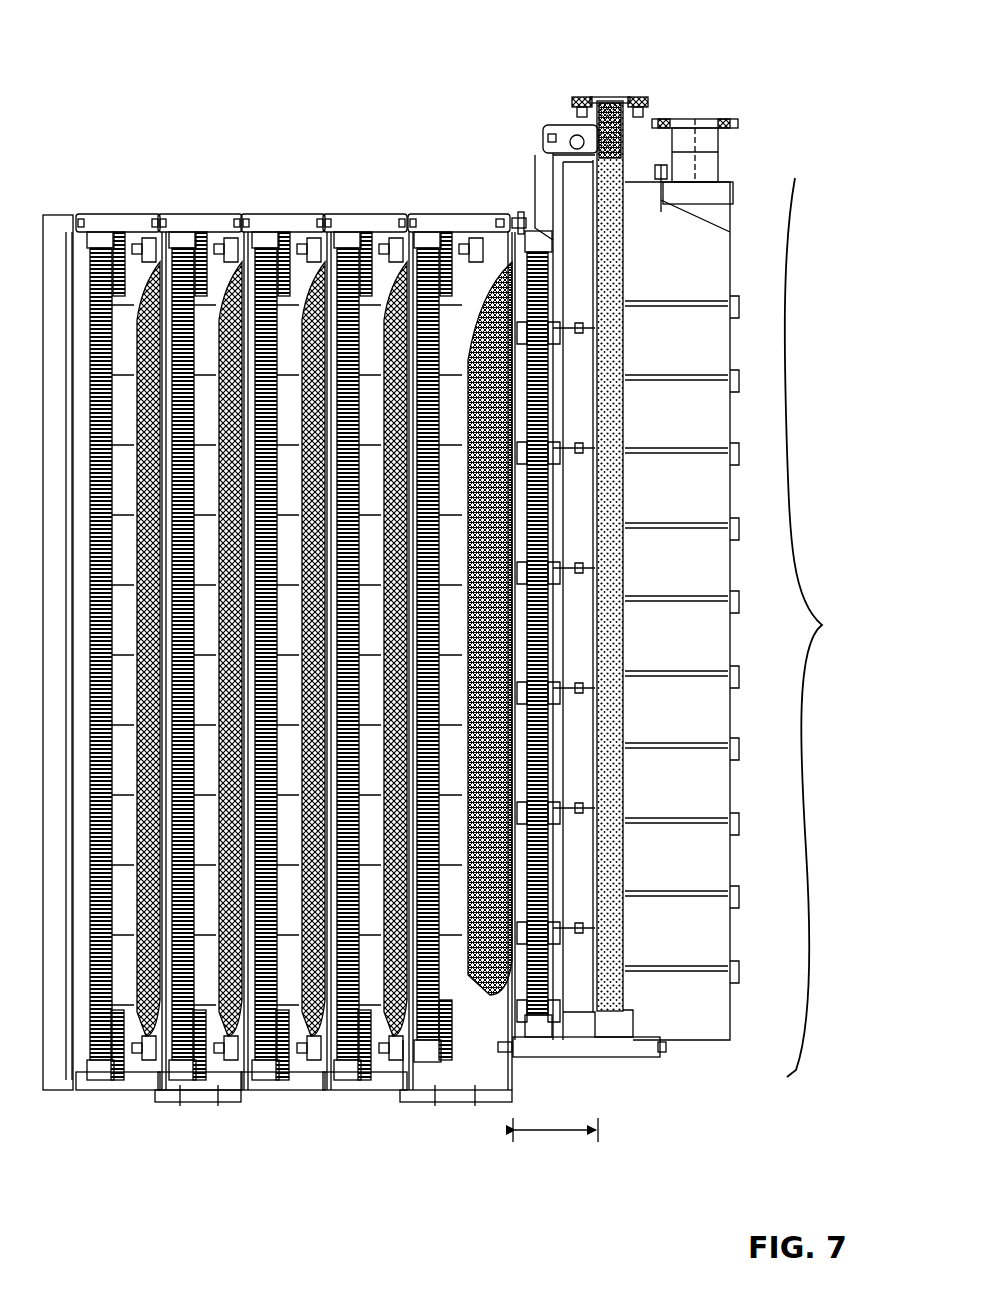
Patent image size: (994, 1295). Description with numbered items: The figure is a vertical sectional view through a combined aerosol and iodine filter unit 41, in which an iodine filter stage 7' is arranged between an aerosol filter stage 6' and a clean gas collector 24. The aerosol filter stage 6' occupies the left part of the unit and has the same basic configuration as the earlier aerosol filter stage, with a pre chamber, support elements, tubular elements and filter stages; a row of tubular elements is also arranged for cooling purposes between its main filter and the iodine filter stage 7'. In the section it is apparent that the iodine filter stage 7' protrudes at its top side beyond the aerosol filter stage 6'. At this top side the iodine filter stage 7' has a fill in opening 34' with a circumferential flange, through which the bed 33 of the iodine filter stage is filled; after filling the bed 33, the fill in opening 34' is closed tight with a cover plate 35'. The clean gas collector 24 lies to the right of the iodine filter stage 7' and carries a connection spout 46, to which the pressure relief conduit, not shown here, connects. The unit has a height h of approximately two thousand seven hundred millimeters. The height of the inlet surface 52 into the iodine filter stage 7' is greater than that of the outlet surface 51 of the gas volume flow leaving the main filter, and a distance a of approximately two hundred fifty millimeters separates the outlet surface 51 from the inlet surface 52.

The aerosol filter stage 6' is at (294, 587).
The iodine filter stage 7' is at (532, 635).
The bed 33 is at (610, 285).
The fill in opening 34' is at (681, 51).
The cover plate 35' is at (580, 58).
The connection spout 46 is at (720, 160).
The combined aerosol and iodine filter unit 41 is at (770, 602).
The clean gas collector 24 is at (695, 568).
The height h is at (819, 627).
The outlet surface 51 is at (524, 850).
The inlet surface 52 is at (596, 838).
The distance a is at (553, 1145).